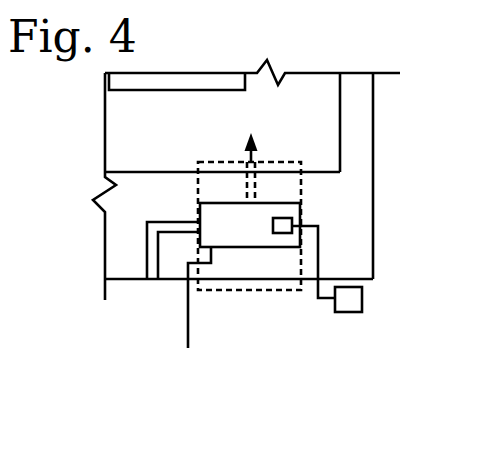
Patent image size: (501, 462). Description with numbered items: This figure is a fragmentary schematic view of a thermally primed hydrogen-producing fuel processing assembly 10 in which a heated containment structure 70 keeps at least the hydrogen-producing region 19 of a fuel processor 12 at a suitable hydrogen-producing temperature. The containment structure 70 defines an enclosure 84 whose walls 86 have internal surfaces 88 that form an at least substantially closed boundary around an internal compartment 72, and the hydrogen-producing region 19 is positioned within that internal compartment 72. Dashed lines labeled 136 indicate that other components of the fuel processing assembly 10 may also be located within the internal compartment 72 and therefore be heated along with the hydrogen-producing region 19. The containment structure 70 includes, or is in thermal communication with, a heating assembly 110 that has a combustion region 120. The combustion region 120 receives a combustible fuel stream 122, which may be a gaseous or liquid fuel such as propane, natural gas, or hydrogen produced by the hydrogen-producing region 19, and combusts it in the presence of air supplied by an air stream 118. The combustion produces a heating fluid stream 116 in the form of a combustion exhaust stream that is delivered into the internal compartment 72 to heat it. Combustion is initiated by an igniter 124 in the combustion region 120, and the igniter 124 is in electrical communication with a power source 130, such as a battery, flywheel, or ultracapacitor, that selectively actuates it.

The thermally primed fuel processing assembly 10 is at (34, 106).
The fuel processor 12 is at (73, 107).
The hydrogen-producing region 19 is at (187, 99).
The other components of the fuel processing assembly 136 is at (126, 111).
The internal surfaces 88 is at (128, 172).
The internal compartment 72 is at (193, 150).
The heating fluid stream 116 is at (257, 152).
The air stream 118 is at (177, 220).
The heating assembly 110 is at (228, 260).
The combustion region 120 is at (257, 248).
The combustible fuel stream 122 is at (190, 332).
The igniter 124 is at (292, 222).
The enclosure 84 is at (113, 300).
The heated containment structure 70 is at (115, 324).
The walls 86 is at (162, 290).
The power source 130 is at (363, 292).